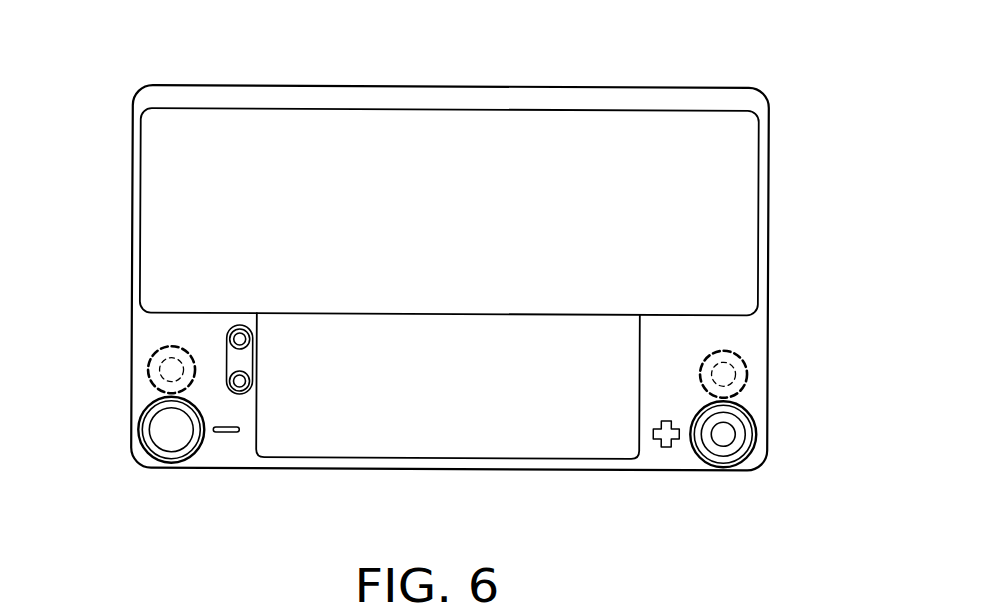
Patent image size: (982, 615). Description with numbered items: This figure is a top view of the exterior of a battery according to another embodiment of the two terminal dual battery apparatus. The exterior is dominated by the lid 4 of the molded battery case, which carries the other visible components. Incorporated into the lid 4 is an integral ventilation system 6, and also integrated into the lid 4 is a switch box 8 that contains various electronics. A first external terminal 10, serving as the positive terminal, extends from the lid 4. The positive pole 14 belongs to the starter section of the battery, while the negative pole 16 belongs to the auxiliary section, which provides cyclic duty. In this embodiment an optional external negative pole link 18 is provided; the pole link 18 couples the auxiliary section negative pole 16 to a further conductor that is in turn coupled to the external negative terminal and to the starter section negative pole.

The lid 4 is at (570, 98).
The integral ventilation system 6 is at (700, 215).
The switch box 8 is at (553, 423).
The first external terminal 10 is at (743, 448).
The positive pole 14 is at (158, 438).
The negative pole 16 is at (165, 358).
The external negative pole link 18 is at (243, 361).